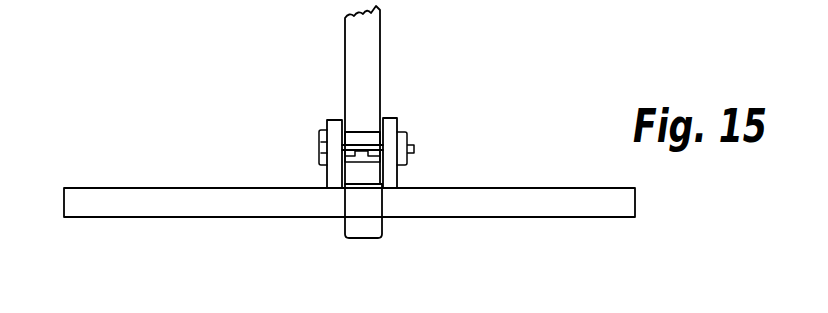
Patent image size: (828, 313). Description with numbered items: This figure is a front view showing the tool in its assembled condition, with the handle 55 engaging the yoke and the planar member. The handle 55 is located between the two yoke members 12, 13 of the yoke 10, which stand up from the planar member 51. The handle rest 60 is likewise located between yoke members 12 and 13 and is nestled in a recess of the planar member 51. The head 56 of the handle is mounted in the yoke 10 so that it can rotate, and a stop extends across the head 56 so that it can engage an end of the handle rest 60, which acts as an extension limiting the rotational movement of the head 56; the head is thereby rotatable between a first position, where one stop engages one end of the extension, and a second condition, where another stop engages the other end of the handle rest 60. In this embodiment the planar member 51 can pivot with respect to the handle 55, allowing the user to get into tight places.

The yoke 10 is at (390, 120).
The yoke member 12 is at (327, 120).
The yoke member 13 is at (394, 123).
The planar member 51 is at (513, 196).
The handle 55 is at (370, 33).
The head 56 is at (358, 132).
The handle rest 60 is at (388, 170).